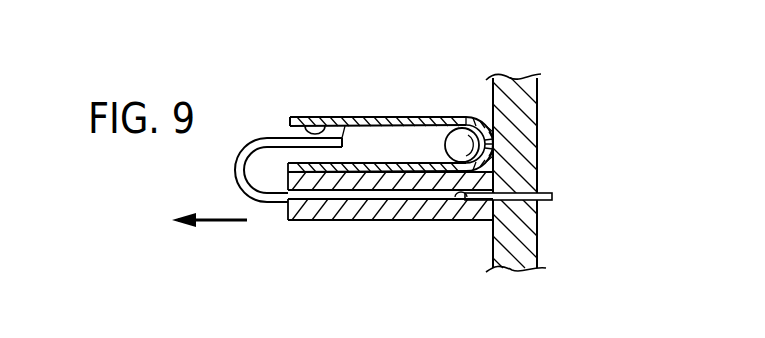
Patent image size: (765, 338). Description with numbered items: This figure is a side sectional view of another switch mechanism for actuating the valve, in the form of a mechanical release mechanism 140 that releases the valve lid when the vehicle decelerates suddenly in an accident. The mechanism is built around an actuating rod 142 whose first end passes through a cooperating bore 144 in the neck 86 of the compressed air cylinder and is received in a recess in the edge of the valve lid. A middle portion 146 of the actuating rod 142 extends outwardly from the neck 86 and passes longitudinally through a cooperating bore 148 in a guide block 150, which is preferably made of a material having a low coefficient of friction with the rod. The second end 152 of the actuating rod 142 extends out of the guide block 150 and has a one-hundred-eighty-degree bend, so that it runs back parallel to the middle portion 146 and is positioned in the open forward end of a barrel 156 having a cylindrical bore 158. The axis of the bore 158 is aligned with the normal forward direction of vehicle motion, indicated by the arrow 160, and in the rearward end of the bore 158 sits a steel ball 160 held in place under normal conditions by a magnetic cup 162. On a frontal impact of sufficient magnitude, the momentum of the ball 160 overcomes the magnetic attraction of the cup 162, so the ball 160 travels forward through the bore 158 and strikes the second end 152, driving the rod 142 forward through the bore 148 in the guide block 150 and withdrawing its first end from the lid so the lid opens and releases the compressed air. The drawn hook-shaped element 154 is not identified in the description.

The mechanical release mechanism 140 is at (466, 58).
The neck 86 is at (538, 111).
The actuating rod 142 is at (548, 193).
The cooperating bore 144 is at (538, 223).
The second end 152 is at (345, 117).
The cylindrical bore 158 is at (310, 117).
The magnetic cup 162 is at (470, 117).
The steel ball 160 is at (446, 148).
The barrel 156 is at (413, 87).
The U-shaped spring hook 154 is at (234, 168).
The guide block 150 is at (325, 222).
The cooperating bore 148 is at (388, 200).
The middle portion 146 is at (461, 203).